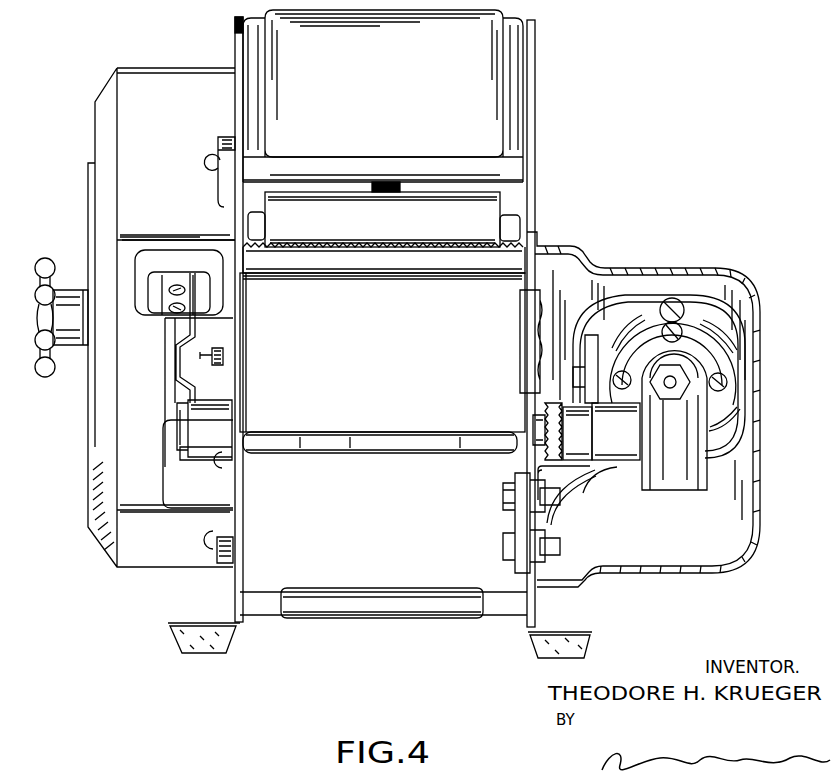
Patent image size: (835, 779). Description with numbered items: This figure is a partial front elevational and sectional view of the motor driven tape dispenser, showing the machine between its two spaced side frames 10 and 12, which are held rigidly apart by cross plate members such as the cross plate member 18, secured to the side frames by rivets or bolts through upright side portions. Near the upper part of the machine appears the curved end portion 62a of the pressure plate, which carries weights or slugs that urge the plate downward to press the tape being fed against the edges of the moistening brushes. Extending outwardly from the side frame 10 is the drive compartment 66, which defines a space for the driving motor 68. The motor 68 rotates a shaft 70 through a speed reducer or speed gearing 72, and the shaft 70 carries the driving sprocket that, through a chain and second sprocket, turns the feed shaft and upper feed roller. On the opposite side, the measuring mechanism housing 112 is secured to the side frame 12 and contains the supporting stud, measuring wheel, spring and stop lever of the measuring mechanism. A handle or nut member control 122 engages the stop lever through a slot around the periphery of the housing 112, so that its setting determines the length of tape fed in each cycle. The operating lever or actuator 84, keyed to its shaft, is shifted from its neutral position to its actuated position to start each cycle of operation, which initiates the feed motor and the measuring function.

The side frame 10 is at (535, 40).
The side frame 12 is at (233, 33).
The cross plate member 18 is at (427, 455).
The curved end portion 62a is at (502, 208).
The drive compartment 66 is at (660, 267).
The driving motor 68 is at (722, 442).
The shaft 70 is at (553, 407).
The speed reducer 72 is at (627, 462).
The operating lever 84 is at (151, 331).
The measuring mechanism housing 112 is at (100, 132).
The handle or nut member control 122 is at (40, 367).